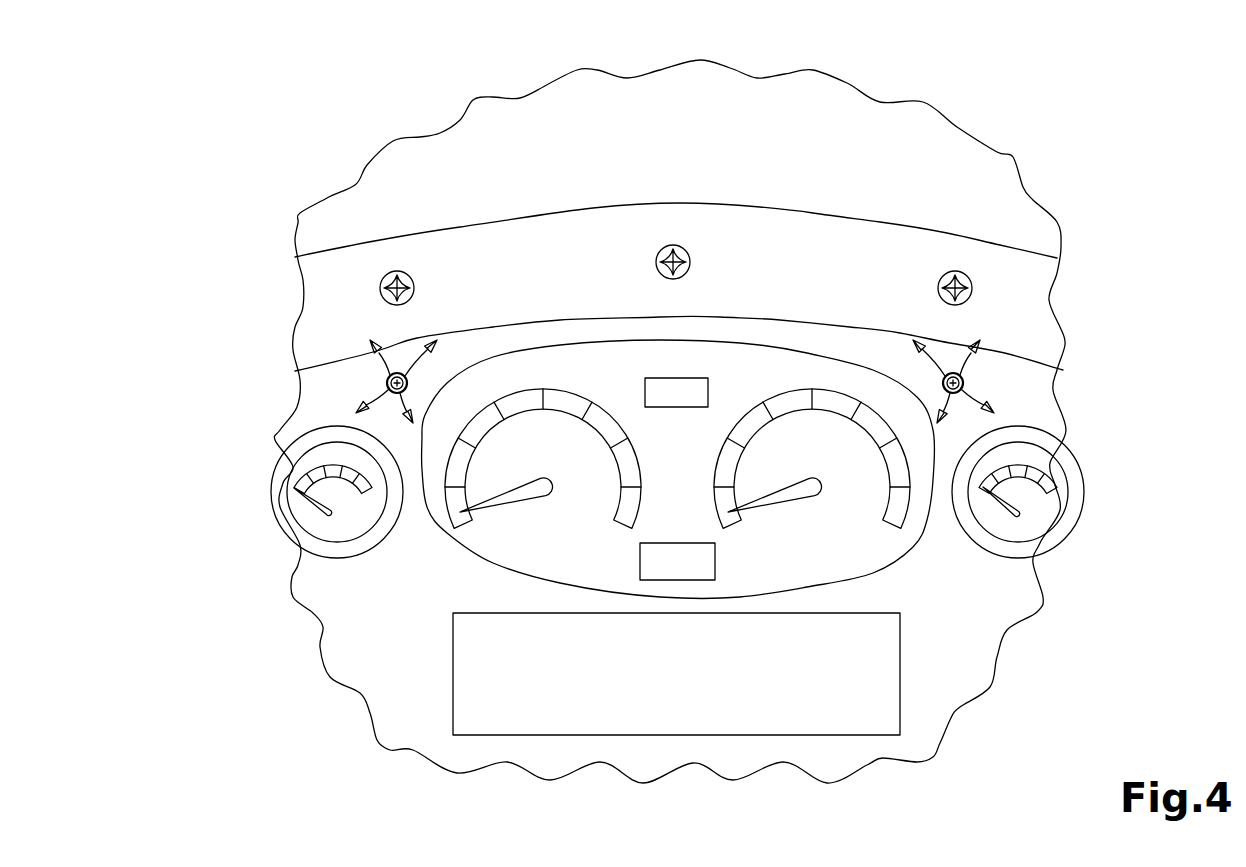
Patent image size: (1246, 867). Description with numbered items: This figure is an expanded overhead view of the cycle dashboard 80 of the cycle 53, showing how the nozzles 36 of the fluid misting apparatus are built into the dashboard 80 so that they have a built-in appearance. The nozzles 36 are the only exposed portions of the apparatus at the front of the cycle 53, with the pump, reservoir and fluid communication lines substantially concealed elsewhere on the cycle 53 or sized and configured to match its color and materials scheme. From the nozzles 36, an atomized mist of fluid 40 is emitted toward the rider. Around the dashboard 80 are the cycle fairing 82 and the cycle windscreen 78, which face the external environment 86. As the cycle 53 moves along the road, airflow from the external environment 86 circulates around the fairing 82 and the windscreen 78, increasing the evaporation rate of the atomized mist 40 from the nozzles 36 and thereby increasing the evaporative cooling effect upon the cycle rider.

The nozzle 36 is at (385, 377).
The atomized mist of fluid 40 is at (362, 295).
The cycle 53 is at (316, 640).
The cycle windscreen 78 is at (681, 157).
The cycle dashboard 80 is at (969, 617).
The cycle fairing 82 is at (811, 282).
The external environment 86 is at (1079, 114).